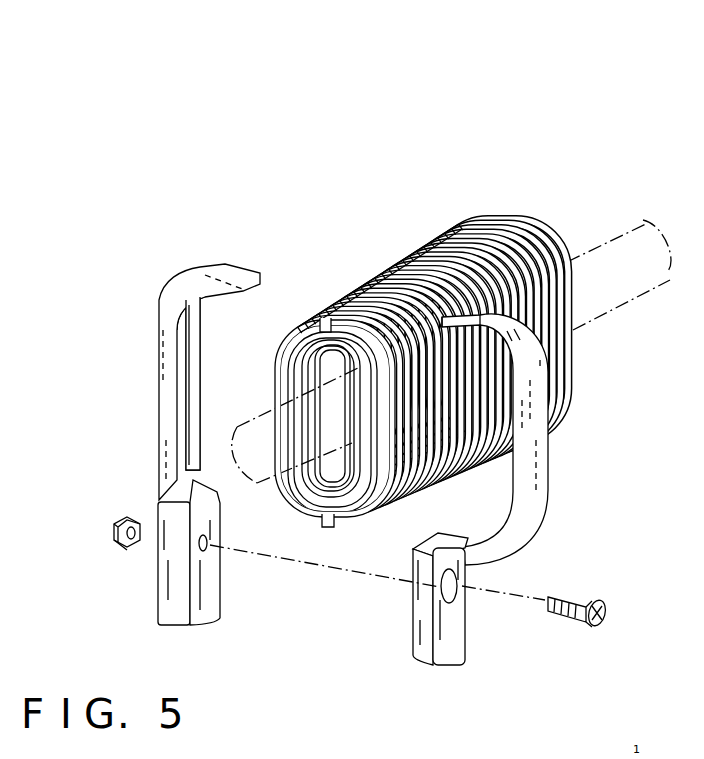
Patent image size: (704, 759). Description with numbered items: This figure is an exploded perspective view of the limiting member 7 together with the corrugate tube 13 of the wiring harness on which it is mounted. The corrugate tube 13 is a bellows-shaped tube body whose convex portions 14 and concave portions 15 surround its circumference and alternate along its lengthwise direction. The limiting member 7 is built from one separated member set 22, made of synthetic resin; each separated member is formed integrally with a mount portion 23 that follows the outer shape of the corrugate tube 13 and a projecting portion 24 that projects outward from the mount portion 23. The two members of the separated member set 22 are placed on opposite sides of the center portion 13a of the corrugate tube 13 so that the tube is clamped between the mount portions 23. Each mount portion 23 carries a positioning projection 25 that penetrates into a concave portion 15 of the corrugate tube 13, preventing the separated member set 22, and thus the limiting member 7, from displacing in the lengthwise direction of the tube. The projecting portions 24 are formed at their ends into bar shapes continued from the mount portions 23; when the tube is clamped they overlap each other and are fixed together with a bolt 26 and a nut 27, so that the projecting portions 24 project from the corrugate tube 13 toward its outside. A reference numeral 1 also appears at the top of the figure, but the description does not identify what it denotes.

The spring assembly 1 is at (529, 100).
The limiting member 7 is at (415, 716).
The corrugate tube 13 is at (426, 235).
The center portion of the corrugate tube 13a is at (397, 270).
The convex portions 14 is at (531, 238).
The concave portions 15 is at (492, 240).
The separated member set 22 is at (180, 627).
The mount portion 23 is at (549, 453).
The projecting portion 24 is at (463, 614).
The positioning projection 25 is at (516, 500).
The bolt 26 is at (594, 629).
The nut 27 is at (120, 555).